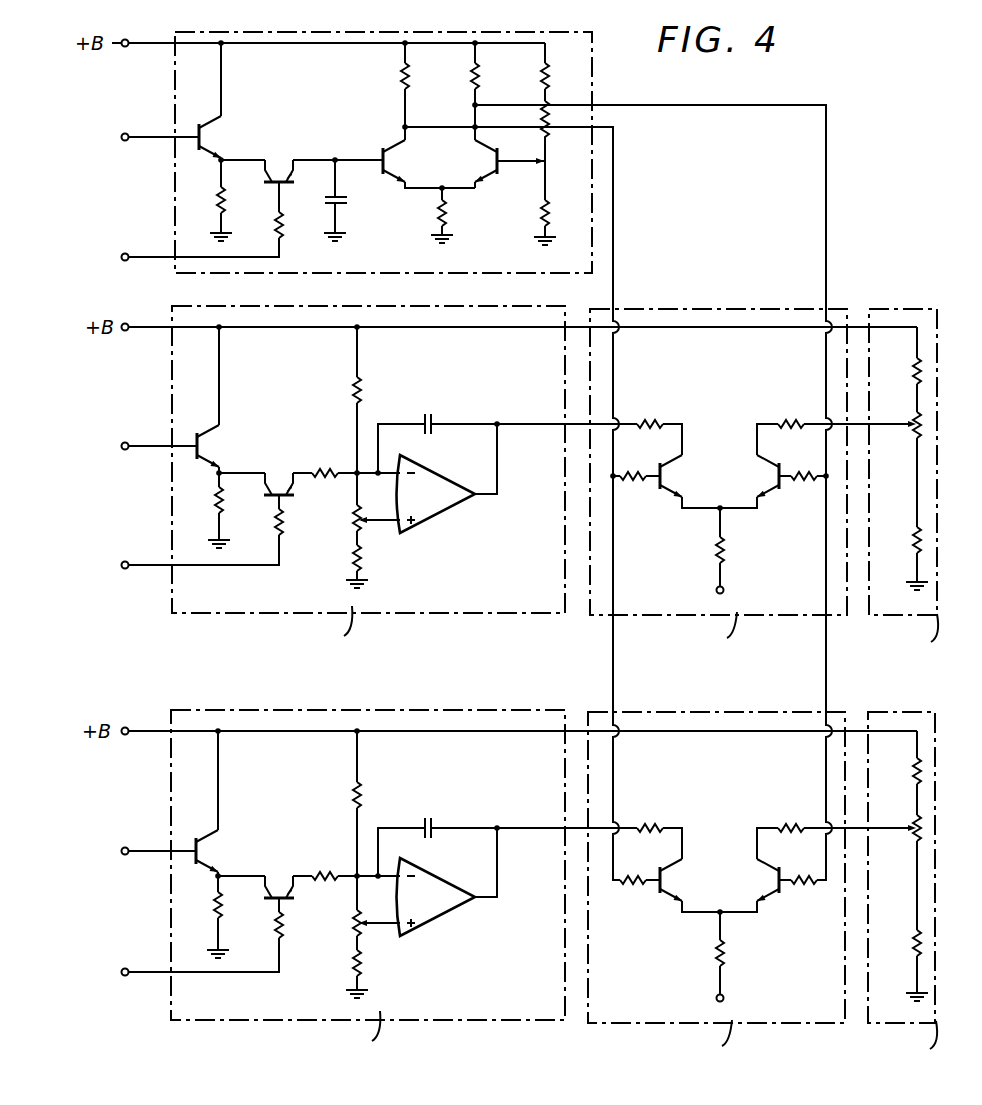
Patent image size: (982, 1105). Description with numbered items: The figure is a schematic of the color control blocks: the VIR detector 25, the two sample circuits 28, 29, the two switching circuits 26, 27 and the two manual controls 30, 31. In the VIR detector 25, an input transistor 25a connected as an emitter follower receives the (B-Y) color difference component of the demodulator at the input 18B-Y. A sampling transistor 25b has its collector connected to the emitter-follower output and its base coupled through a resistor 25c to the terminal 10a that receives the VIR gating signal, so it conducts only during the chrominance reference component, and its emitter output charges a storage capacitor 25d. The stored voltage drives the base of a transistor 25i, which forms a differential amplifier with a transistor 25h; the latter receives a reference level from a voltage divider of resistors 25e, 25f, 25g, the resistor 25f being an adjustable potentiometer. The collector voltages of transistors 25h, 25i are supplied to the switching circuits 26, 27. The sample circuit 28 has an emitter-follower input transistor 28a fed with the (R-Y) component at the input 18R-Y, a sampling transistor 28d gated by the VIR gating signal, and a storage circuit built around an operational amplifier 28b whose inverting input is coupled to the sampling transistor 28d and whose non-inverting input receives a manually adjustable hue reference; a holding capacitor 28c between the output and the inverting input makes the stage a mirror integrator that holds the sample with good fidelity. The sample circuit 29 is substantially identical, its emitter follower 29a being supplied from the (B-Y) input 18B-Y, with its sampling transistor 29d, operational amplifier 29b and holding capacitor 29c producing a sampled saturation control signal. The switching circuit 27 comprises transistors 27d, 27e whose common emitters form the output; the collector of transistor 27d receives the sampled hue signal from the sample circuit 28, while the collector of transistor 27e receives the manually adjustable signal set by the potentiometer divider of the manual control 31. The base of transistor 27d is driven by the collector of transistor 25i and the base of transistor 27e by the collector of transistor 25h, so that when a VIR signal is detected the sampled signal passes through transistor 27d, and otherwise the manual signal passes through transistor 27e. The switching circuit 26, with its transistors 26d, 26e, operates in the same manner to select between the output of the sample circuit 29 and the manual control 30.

The VIR detector 25 is at (592, 68).
The input transistor 25a is at (198, 126).
The sampling transistor 25b is at (267, 161).
The resistor 25c is at (276, 213).
The storage capacitor 25d is at (349, 199).
The resistor 25e is at (544, 83).
The adjustable resistor 25f is at (547, 167).
The resistor 25g is at (539, 209).
The transistor 25h is at (508, 121).
The transistor 25i is at (380, 153).
The sample circuit 28 is at (216, 308).
The input transistor 28a is at (196, 436).
The operational amplifier 28b is at (437, 512).
The holding capacitor 28c is at (427, 414).
The sampling transistor 28d is at (271, 476).
The switching circuit 27 is at (715, 309).
The transistor 27d is at (657, 492).
The transistor 27e is at (775, 492).
The manual control 31 is at (903, 309).
The sample circuit 29 is at (462, 710).
The emitter-follower 29a is at (194, 840).
The operational amplifier 29b is at (437, 918).
The integrating capacitor 29c is at (427, 821).
The sampling gate transistor 29d is at (272, 882).
The switching circuit 26 is at (675, 715).
The switching transistor 26d is at (657, 896).
The switching transistor 26e is at (775, 896).
The manual control 30 is at (900, 715).
The terminal 10a is at (156, 597).
The B-Y signal input terminal 18B-Y is at (129, 493).
The R-Y signal input terminal 18R-Y is at (127, 445).